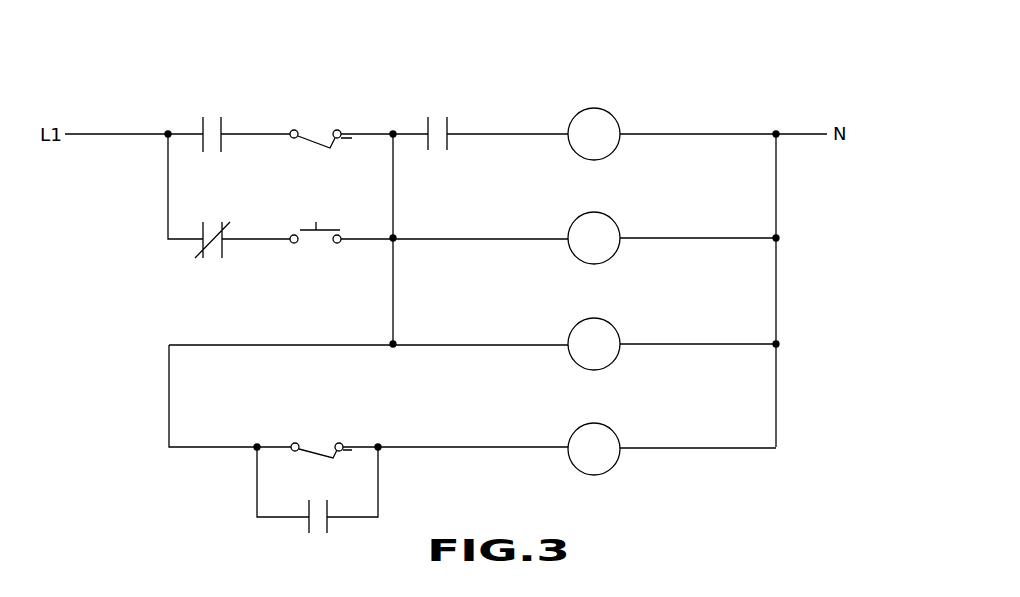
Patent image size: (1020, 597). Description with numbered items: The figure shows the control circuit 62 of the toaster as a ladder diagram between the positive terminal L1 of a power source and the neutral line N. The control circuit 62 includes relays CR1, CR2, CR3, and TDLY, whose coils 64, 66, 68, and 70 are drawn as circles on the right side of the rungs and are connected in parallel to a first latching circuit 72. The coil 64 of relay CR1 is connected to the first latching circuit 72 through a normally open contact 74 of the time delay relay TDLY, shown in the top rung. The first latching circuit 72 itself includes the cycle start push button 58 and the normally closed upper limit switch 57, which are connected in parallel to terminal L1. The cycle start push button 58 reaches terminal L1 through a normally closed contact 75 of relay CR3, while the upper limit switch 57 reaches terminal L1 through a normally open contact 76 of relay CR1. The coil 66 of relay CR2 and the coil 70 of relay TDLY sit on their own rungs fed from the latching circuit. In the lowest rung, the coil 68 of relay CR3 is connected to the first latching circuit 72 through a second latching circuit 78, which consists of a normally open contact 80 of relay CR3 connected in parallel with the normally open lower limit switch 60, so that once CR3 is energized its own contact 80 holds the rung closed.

The control circuit 62 is at (747, 93).
The normally open contact of the relay CR1 76 is at (200, 128).
The upper limit switch 57 is at (348, 98).
The normally open contact of the relay TDLY 74 is at (449, 127).
The coil of the relay CR1 64 is at (596, 110).
The first latching circuit 72 is at (155, 200).
The normally closed contact of the relay CR3 75 is at (216, 258).
The cycle start push button 58 is at (316, 243).
The coil of the relay TDLY 70 is at (598, 213).
The coil of the relay CR2 66 is at (598, 319).
The coil of the relay CR3 68 is at (598, 424).
The lower limit switch 60 is at (364, 411).
The second latching circuit 78 is at (228, 496).
The normally open contact of the relay CR3 80 is at (314, 535).